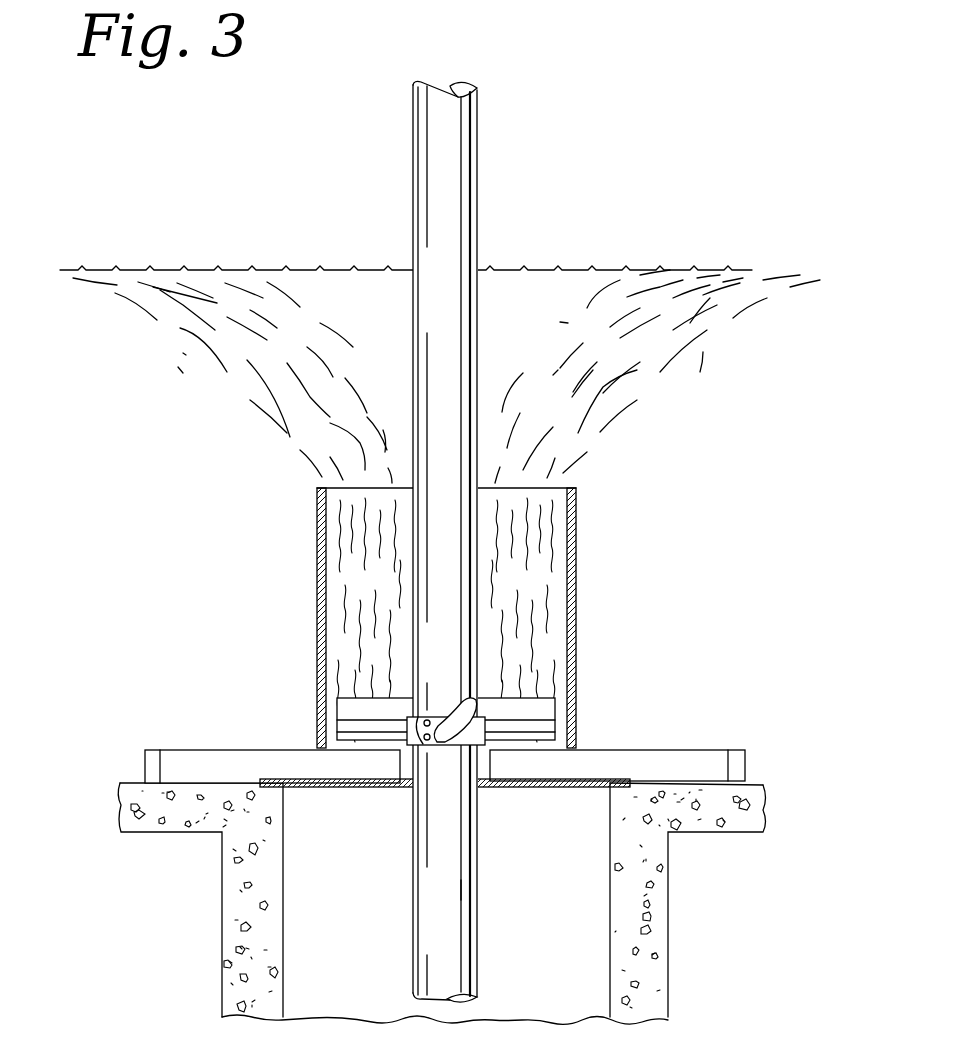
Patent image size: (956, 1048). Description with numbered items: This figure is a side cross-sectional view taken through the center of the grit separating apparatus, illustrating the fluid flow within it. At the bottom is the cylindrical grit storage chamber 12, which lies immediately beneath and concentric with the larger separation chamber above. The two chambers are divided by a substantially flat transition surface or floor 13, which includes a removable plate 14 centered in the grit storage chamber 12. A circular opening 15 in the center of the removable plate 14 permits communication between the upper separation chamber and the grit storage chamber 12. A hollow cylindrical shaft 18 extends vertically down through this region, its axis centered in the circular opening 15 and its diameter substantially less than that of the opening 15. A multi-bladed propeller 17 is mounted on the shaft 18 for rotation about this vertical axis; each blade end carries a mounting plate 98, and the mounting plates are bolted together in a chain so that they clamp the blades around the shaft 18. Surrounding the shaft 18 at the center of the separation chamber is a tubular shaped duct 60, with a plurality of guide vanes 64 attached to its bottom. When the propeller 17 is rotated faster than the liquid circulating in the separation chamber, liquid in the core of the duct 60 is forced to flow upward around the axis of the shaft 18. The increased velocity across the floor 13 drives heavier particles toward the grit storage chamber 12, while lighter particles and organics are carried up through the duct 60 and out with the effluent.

The grit storage chamber 12 is at (441, 903).
The transition surface or floor 13 is at (743, 787).
The removable plate 14 is at (327, 788).
The circular opening 15 is at (405, 788).
The multi-bladed propeller 17 is at (350, 710).
The hollow cylindrical shaft 18 is at (467, 180).
The tubular shaped duct 60 is at (577, 635).
The guide vanes 64 is at (217, 763).
The mounting plate 98 is at (332, 730).